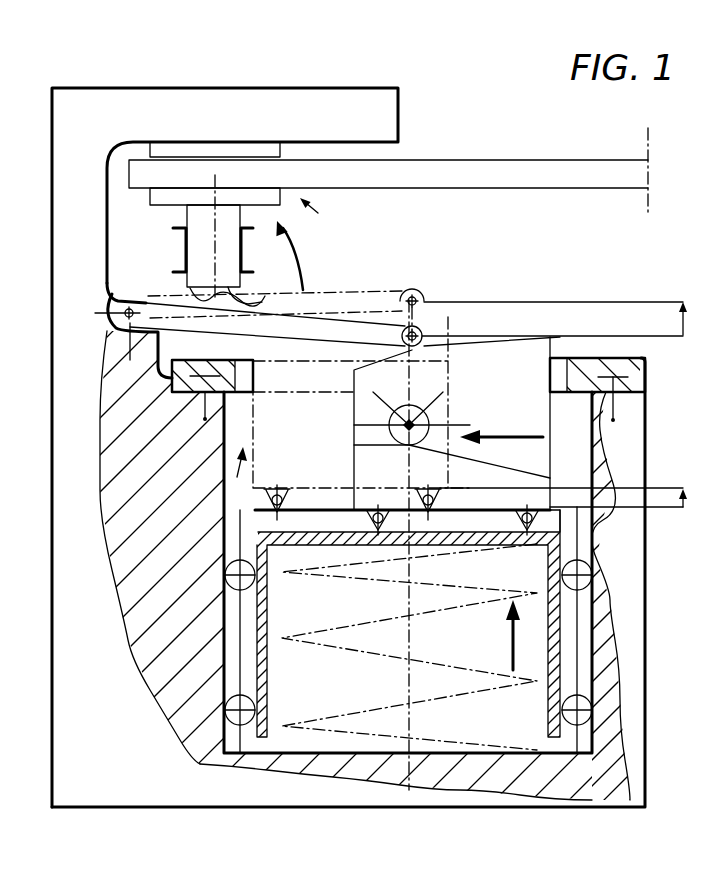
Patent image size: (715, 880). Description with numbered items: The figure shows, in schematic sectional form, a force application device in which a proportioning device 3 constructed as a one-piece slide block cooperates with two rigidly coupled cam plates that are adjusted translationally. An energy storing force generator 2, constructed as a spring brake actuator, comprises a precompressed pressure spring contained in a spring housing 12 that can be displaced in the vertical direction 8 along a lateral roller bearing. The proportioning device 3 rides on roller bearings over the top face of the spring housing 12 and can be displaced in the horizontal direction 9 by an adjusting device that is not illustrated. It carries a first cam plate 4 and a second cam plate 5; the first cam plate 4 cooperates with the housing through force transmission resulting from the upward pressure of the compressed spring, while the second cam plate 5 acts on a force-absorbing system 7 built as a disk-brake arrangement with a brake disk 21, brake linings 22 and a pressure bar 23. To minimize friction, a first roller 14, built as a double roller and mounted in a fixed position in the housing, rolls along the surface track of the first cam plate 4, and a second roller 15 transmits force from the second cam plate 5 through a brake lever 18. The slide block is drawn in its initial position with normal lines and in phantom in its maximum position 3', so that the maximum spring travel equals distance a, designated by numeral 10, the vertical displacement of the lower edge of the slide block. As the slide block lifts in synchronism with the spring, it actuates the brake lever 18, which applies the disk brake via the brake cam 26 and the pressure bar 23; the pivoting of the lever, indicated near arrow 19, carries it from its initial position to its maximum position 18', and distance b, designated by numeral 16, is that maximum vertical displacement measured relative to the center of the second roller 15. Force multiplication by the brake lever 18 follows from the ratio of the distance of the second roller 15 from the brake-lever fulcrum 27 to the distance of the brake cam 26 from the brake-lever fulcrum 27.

The force generator 2 is at (408, 222).
The proportioning device 3 is at (452, 367).
The maximum position of proportioning device 3' is at (239, 482).
The first cam plate 4 is at (523, 468).
The second cam plate 5 is at (500, 336).
The force-absorbing system 7 is at (316, 217).
The vertical direction 8 is at (513, 627).
The horizontal direction 9 is at (498, 434).
The distance a 10 is at (680, 510).
The spring housing 12 is at (560, 630).
The first roller 14 is at (438, 423).
The second roller 15 is at (427, 310).
The distance b 16 is at (682, 336).
The brake lever 18 is at (267, 333).
The maximum position of brake lever 18' is at (294, 290).
The pivoting direction 19 is at (300, 262).
The brake disk 21 is at (510, 165).
The brake linings 22 is at (260, 197).
The pressure bar 23 is at (195, 220).
The brake cam 26 is at (250, 295).
The brake-lever fulcrum 27 is at (124, 296).
The distance a is at (574, 499).
The distance b is at (565, 318).